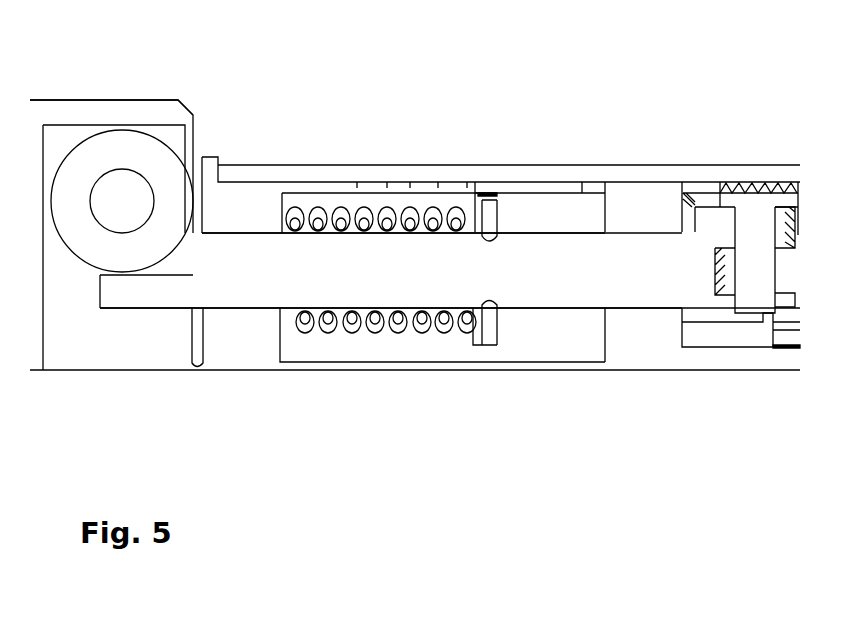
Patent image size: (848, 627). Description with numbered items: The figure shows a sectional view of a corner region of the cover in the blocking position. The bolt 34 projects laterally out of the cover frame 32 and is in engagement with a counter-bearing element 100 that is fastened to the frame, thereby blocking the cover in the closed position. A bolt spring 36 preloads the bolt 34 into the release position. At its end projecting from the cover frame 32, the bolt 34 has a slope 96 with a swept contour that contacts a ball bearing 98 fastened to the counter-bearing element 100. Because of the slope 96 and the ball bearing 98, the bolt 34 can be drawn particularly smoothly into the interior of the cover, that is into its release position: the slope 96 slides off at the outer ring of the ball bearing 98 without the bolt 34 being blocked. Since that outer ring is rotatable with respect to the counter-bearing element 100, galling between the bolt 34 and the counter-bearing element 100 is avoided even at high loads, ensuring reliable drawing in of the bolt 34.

The counter-bearing element 100 is at (88, 120).
The ball bearing 98 is at (131, 157).
The slope 96 is at (158, 270).
The bolt 34 is at (403, 278).
The bolt spring 36 is at (417, 322).
The cover frame 32 is at (635, 335).